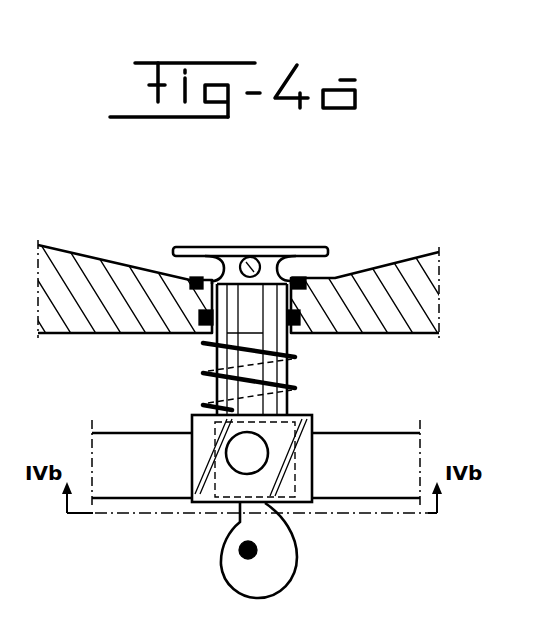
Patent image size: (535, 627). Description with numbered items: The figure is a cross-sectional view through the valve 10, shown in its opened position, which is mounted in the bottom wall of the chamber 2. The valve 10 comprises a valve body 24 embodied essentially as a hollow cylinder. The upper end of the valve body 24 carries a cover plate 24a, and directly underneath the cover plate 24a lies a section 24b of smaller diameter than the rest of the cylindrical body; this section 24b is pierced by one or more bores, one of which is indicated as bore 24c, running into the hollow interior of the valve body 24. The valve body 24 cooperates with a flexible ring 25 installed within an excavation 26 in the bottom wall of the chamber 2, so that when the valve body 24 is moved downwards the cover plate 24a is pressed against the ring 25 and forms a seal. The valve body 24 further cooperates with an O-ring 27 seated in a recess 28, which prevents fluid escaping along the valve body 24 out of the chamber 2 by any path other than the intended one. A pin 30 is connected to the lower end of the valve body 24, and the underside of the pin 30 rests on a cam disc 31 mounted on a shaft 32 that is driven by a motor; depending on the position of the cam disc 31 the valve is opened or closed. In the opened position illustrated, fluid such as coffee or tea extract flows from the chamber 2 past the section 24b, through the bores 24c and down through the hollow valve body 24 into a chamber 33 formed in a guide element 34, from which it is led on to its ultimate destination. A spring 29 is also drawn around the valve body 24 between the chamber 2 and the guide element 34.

The chamber 2 is at (415, 268).
The valve 10 is at (253, 289).
The valve body 24 is at (288, 248).
The cover plate 24a is at (328, 254).
The section with smaller diameter 24b is at (203, 252).
The bore 24c is at (253, 255).
The flexible ring 25 is at (306, 280).
The excavation 26 is at (188, 277).
The O-ring 27 is at (305, 328).
The recess 28 is at (200, 326).
The spring 29 is at (290, 390).
The pin 30 is at (252, 487).
The cam disc 31 is at (273, 558).
The shaft 32 is at (243, 552).
The chamber 33 is at (312, 440).
The guide element 34 is at (192, 428).